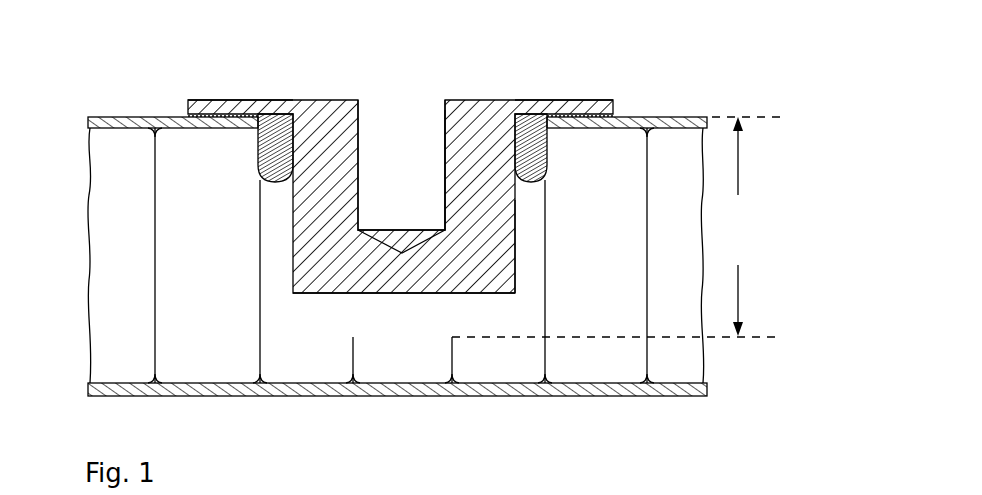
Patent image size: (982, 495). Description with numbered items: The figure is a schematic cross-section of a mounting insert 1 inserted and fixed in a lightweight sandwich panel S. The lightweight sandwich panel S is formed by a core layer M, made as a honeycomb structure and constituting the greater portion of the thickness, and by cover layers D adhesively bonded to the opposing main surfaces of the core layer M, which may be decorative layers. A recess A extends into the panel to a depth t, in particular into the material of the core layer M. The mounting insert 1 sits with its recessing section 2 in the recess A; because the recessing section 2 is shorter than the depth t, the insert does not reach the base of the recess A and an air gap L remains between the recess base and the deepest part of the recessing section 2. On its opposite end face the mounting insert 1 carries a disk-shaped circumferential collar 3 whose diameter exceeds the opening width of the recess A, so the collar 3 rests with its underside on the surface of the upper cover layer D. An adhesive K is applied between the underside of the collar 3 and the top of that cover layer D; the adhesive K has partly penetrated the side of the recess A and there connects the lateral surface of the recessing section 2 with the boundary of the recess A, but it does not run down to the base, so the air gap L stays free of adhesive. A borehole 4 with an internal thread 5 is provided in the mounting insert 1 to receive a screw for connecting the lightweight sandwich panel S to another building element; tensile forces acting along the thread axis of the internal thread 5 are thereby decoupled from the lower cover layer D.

The mounting insert 1 is at (510, 77).
The recessing section 2 is at (517, 265).
The circumferential collar 3 is at (233, 99).
The borehole 4 is at (382, 113).
The internal thread 5 is at (444, 130).
The lightweight sandwich panel S is at (72, 128).
The cover layers D is at (117, 117).
The adhesive K is at (185, 116).
The core layer M is at (90, 242).
The recess A is at (530, 250).
The air gap L is at (352, 320).
The depth t is at (746, 226).